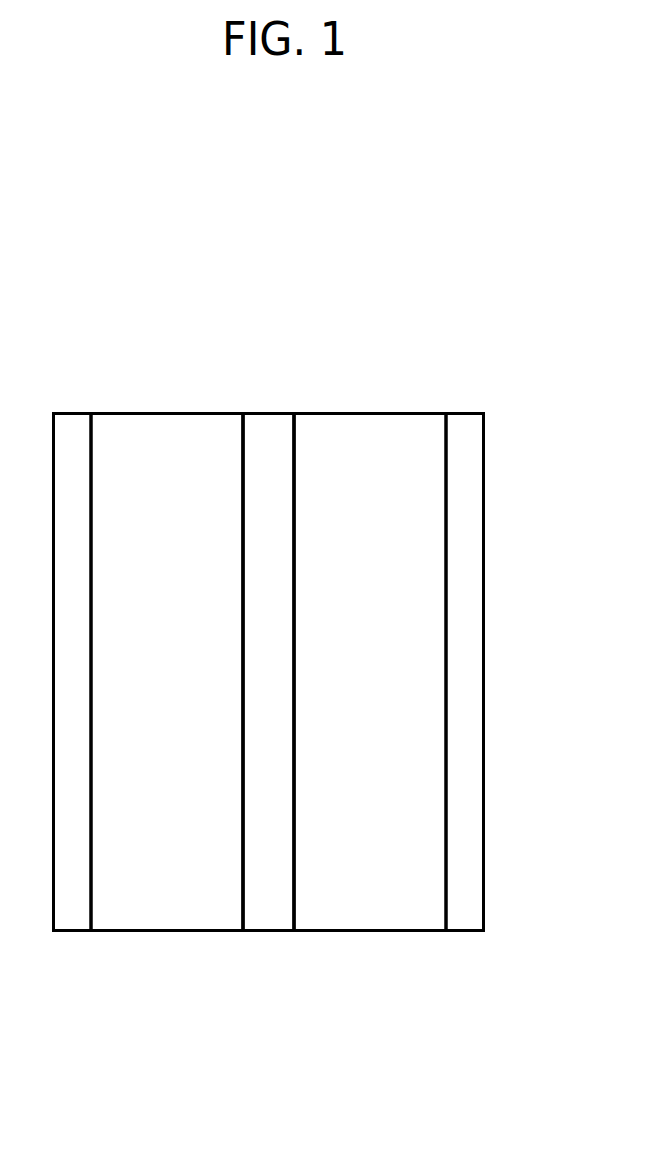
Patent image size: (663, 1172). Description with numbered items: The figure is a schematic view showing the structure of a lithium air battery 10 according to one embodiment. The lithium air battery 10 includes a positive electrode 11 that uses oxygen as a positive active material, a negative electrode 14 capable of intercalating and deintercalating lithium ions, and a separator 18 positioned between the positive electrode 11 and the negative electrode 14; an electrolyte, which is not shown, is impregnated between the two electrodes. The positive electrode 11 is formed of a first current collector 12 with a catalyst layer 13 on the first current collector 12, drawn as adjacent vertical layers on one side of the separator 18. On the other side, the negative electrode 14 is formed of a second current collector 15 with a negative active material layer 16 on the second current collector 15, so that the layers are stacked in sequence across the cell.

The lithium air battery 10 is at (288, 232).
The positive electrode 11 is at (243, 943).
The first current collector 12 is at (74, 432).
The catalyst layer 13 is at (169, 432).
The separator 18 is at (270, 432).
The negative electrode 14 is at (483, 943).
The negative active material layer 16 is at (376, 432).
The second current collector 15 is at (467, 432).